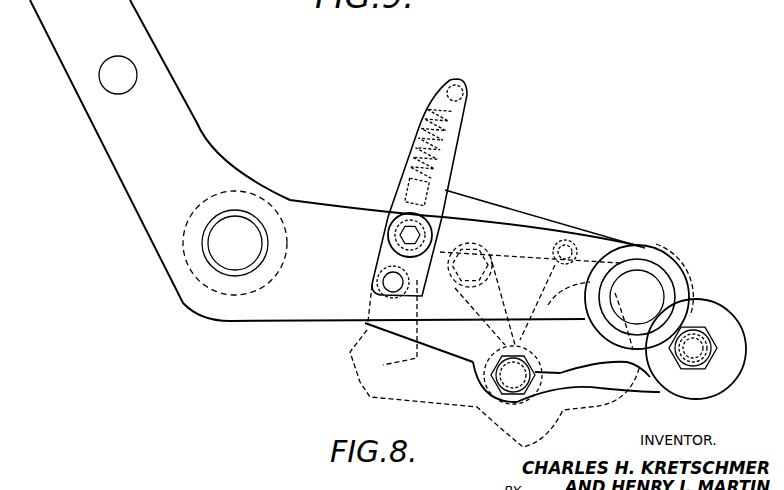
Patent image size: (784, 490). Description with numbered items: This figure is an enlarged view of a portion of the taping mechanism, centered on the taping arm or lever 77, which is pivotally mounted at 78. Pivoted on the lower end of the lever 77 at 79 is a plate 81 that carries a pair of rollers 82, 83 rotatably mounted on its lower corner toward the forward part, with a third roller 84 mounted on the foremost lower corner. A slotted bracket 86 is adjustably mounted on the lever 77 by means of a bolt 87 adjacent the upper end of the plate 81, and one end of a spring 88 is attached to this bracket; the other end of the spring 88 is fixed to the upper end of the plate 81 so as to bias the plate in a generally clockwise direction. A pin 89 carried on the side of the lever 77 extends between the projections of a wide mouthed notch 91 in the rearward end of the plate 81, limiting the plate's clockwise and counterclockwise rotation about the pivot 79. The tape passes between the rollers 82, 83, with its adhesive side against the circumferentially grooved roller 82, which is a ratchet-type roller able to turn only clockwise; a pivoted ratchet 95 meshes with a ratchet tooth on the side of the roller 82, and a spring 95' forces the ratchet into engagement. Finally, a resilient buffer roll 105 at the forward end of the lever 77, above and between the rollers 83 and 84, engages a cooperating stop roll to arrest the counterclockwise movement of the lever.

The taping arm or lever 77 is at (195, 155).
The pivot 78 is at (262, 246).
The pivot 79 is at (638, 272).
The plate 81 is at (367, 326).
The roller 82 is at (488, 390).
The roller 83 is at (533, 390).
The third roller 84 is at (728, 372).
The slotted bracket 86 is at (452, 158).
The bolt 87 is at (392, 233).
The spring 88 is at (418, 124).
The pin 89 is at (382, 286).
The wide mouthed notch 91 is at (375, 301).
The pivoted ratchet 95 is at (530, 294).
The spring 95' is at (561, 233).
The buffer roll 105 is at (678, 268).